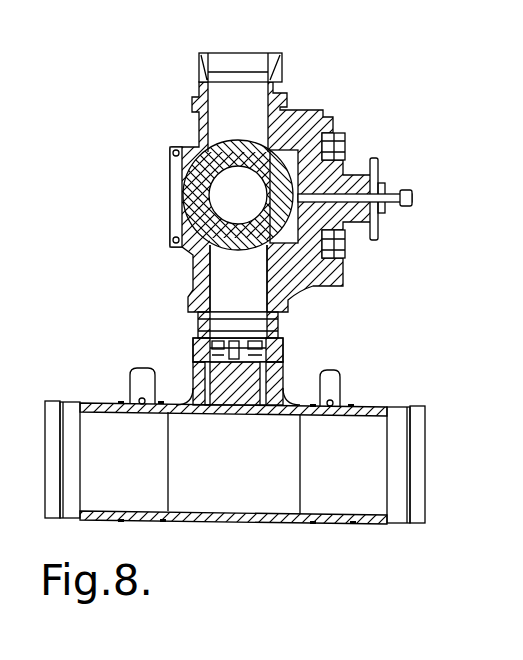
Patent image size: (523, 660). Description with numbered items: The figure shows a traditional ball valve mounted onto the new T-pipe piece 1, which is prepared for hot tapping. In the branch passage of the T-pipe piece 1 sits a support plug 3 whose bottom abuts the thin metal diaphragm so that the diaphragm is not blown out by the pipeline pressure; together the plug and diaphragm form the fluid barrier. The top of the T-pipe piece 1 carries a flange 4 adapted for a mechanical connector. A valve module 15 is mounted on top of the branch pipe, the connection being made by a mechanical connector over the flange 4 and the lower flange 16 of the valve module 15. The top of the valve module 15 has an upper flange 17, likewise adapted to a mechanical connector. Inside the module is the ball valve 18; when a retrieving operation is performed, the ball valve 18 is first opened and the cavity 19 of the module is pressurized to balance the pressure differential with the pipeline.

The T-pipe piece 1 is at (380, 397).
The support plug 3 is at (240, 378).
The flange 4 is at (280, 355).
The valve module 15 is at (350, 108).
The lower flange 16 is at (278, 330).
The upper flange 17 is at (282, 55).
The ball valve 18 is at (200, 190).
The cavity 19 is at (230, 285).